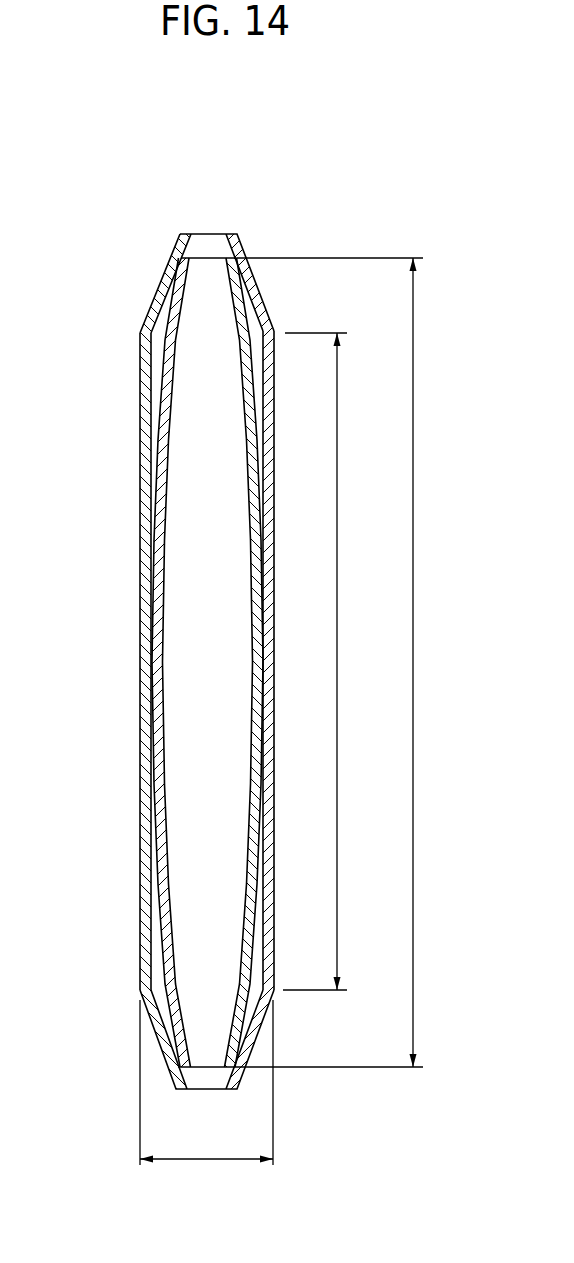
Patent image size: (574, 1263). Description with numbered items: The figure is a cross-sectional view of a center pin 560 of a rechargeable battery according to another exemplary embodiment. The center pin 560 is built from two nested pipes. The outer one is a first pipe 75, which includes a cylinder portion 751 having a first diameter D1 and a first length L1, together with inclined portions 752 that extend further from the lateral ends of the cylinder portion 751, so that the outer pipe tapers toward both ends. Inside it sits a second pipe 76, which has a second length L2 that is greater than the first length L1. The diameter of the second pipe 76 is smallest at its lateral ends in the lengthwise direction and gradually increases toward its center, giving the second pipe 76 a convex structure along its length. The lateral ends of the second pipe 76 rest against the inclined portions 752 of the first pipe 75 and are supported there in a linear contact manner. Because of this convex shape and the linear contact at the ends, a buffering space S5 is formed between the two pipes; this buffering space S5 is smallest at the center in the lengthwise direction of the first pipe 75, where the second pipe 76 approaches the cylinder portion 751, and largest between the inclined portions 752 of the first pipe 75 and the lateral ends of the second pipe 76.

The center pin 560 is at (230, 150).
The first pipe 75 is at (163, 661).
The cylinder portion 751 is at (140, 370).
The inclined portions 752 is at (148, 312).
The second pipe 76 is at (150, 438).
The buffering space S5 is at (157, 977).
The first length L1 is at (326, 661).
The second length L2 is at (341, 662).
The first diameter D1 is at (206, 1082).